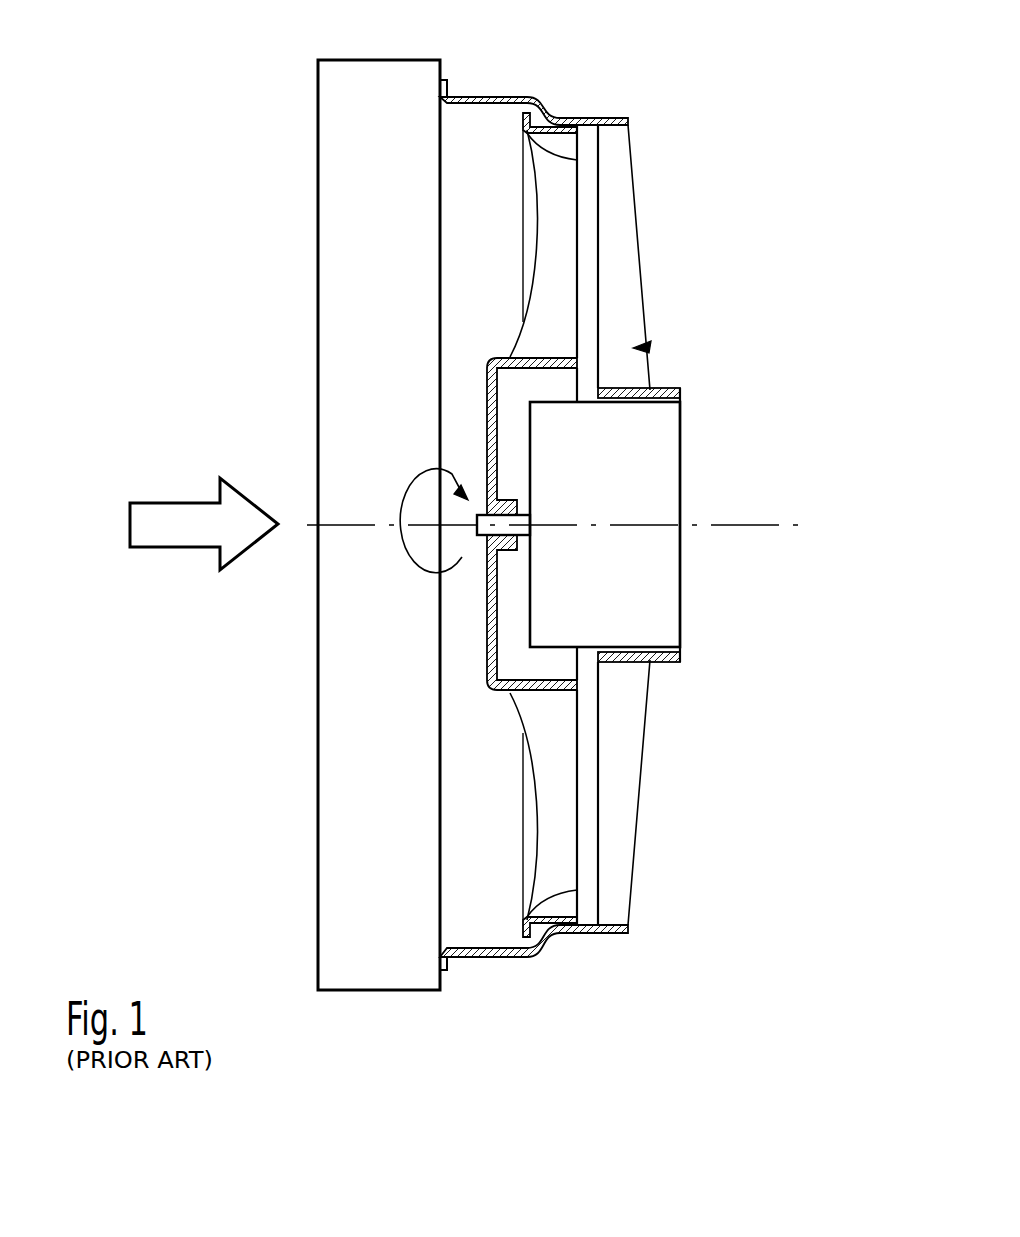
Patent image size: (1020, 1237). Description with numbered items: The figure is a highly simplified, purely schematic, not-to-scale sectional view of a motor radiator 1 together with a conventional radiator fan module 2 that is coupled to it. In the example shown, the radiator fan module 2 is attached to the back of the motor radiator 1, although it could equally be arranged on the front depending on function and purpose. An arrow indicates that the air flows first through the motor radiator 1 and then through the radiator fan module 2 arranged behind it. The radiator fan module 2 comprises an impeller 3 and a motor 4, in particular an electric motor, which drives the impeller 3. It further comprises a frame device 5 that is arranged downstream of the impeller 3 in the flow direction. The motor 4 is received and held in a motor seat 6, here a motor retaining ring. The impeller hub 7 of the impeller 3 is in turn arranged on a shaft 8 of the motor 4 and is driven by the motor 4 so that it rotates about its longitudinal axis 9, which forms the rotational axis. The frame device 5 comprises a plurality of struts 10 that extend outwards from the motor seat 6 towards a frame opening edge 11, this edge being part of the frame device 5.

The motor radiator 1 is at (330, 272).
The radiator fan module 2 is at (680, 52).
The impeller 3 is at (560, 233).
The motor 4 is at (660, 459).
The frame device 5 is at (649, 347).
The motor seat 6 is at (665, 388).
The impeller hub 7 is at (517, 545).
The shaft 8 is at (530, 528).
The longitudinal axis 9 is at (777, 523).
The struts 10 is at (615, 276).
The frame opening edge 11 is at (613, 125).